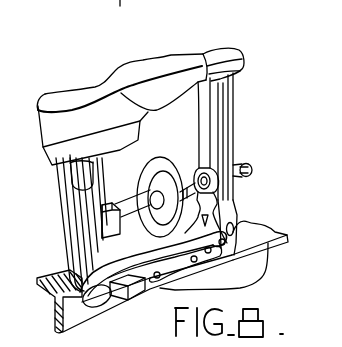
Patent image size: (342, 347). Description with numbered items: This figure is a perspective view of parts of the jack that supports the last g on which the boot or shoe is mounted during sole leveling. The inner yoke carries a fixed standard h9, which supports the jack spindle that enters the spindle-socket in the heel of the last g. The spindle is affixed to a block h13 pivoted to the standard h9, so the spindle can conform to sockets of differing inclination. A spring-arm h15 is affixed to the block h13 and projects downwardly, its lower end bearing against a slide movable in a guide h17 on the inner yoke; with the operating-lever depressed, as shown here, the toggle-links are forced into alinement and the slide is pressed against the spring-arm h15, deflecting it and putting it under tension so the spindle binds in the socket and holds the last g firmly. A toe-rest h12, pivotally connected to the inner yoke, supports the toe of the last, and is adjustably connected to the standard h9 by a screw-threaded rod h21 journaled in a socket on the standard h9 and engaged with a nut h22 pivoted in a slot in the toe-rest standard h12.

The last g is at (118, 150).
The fixed standard h9 is at (60, 190).
The toe-rest h12 is at (221, 118).
The block h13 is at (95, 165).
The spring-arm h15 is at (100, 228).
The guide h17 is at (137, 287).
The screw-threaded rod h21 is at (252, 166).
The nut h22 is at (197, 175).